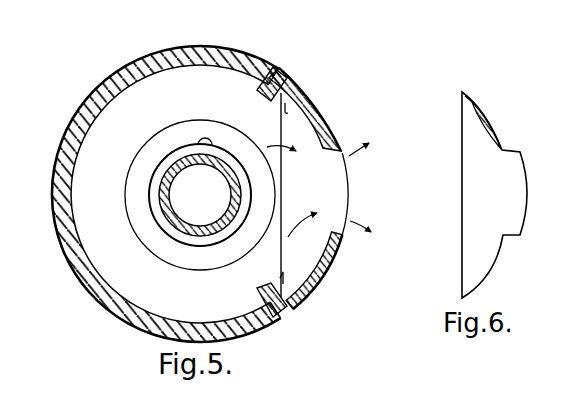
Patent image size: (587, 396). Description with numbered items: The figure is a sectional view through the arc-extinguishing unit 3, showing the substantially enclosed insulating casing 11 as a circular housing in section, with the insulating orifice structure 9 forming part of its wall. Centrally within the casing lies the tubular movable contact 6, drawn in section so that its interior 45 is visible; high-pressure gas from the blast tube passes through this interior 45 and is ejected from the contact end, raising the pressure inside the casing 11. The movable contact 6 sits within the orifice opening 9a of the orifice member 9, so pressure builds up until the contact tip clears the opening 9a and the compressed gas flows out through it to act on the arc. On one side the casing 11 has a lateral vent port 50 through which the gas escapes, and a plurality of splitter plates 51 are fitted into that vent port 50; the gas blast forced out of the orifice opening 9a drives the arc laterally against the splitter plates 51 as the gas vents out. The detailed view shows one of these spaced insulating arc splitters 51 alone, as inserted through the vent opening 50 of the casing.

In FIG. 5, the blower housing assembly 3 is at (56, 266).
In FIG. 5, the insulating orifice structure 9 is at (78, 162).
In FIG. 5, the insulating casing 11 is at (95, 94).
In FIG. 5, the tubular movable contact 6 is at (165, 163).
In FIG. 5, the orifice opening 9a is at (211, 142).
In FIG. 5, the interior of the movable contact 45 is at (196, 221).
In FIG. 5, the lateral vent port 50 is at (344, 152).
In FIG. 5, the splitter plates 51 is at (281, 262).
In FIG. 6, the splitter plates 51 is at (487, 268).